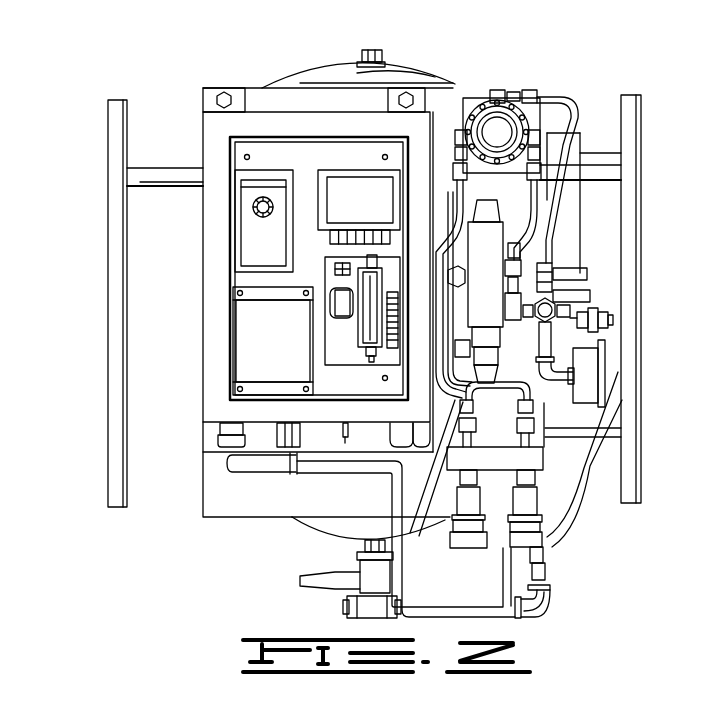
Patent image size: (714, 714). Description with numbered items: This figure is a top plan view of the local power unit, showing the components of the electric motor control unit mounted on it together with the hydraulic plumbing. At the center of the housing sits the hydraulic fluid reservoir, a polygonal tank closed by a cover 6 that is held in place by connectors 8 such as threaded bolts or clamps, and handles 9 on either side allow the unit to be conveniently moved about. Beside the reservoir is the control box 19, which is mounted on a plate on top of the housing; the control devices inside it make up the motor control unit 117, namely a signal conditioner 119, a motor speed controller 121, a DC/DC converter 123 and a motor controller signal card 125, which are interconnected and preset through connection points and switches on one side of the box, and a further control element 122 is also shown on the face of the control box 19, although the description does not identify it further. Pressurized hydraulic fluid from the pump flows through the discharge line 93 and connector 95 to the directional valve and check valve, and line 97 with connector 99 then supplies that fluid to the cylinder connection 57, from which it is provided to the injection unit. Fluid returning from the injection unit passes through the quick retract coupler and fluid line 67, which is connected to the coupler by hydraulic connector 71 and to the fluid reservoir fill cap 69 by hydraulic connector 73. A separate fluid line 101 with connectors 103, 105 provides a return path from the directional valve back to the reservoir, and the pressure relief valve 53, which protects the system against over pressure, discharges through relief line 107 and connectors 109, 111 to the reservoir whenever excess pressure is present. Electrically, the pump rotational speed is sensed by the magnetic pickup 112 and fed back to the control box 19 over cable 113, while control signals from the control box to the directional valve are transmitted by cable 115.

The cover 6 is at (330, 73).
The connectors 8 is at (365, 50).
The handles 9 is at (641, 113).
The control box 19 is at (203, 302).
The pressure relief valve 53 is at (558, 303).
The cylinder connection 57 is at (545, 543).
The fluid line 67 is at (462, 187).
The fluid reservoir fill cap 69 is at (473, 100).
The hydraulic connector 71 is at (542, 530).
The hydraulic connector 73 is at (453, 140).
The discharge line 93 is at (345, 495).
The connector 95 is at (462, 349).
The line 97 is at (530, 390).
The connector 99 is at (558, 435).
The fluid line 101 is at (532, 217).
The connector 103 is at (513, 248).
The connector 105 is at (537, 165).
The relief line 107 is at (558, 108).
The connector 109 is at (552, 274).
The connector 111 is at (533, 90).
The magnetic pickup 112 is at (608, 327).
The cable 113 is at (577, 492).
The cable 115 is at (313, 460).
The motor control unit 117 is at (225, 330).
The signal conditioner 119 is at (250, 345).
The motor speed controller 121 is at (248, 228).
The knob 122 is at (250, 206).
The DC/DC converter 123 is at (348, 196).
The motor controller signal card 125 is at (357, 338).